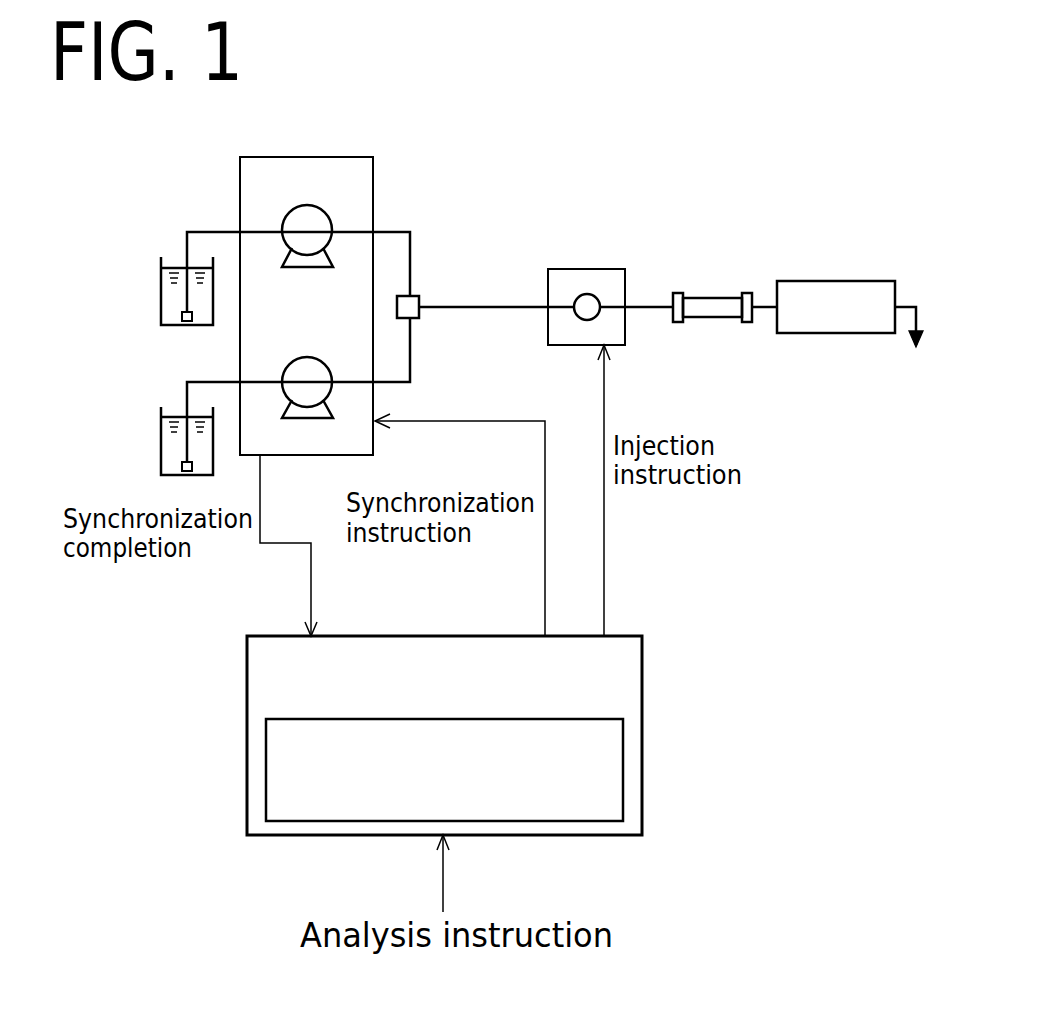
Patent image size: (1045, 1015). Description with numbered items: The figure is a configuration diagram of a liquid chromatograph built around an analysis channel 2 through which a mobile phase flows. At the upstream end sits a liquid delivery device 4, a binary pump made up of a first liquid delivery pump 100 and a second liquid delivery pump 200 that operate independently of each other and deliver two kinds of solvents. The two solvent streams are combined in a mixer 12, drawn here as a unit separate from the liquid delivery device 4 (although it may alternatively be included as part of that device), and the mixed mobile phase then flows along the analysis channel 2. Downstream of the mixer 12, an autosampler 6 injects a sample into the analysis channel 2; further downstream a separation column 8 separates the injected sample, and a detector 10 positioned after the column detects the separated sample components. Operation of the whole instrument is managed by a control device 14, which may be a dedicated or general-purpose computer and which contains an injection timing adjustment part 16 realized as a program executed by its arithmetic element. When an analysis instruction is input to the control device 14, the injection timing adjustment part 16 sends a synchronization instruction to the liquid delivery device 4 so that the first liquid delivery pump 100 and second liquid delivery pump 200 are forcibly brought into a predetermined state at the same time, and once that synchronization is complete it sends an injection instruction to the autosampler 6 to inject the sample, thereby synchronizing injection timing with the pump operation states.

The analysis channel 2 is at (648, 310).
The liquid delivery device 4 is at (373, 157).
The autosampler 6 is at (625, 269).
The separation column 8 is at (720, 296).
The detector 10 is at (853, 280).
The mixer 12 is at (418, 296).
The control device 14 is at (643, 671).
The injection timing adjustment part 16 is at (623, 771).
The first liquid delivery pump 100 is at (318, 222).
The second liquid delivery pump 200 is at (318, 372).